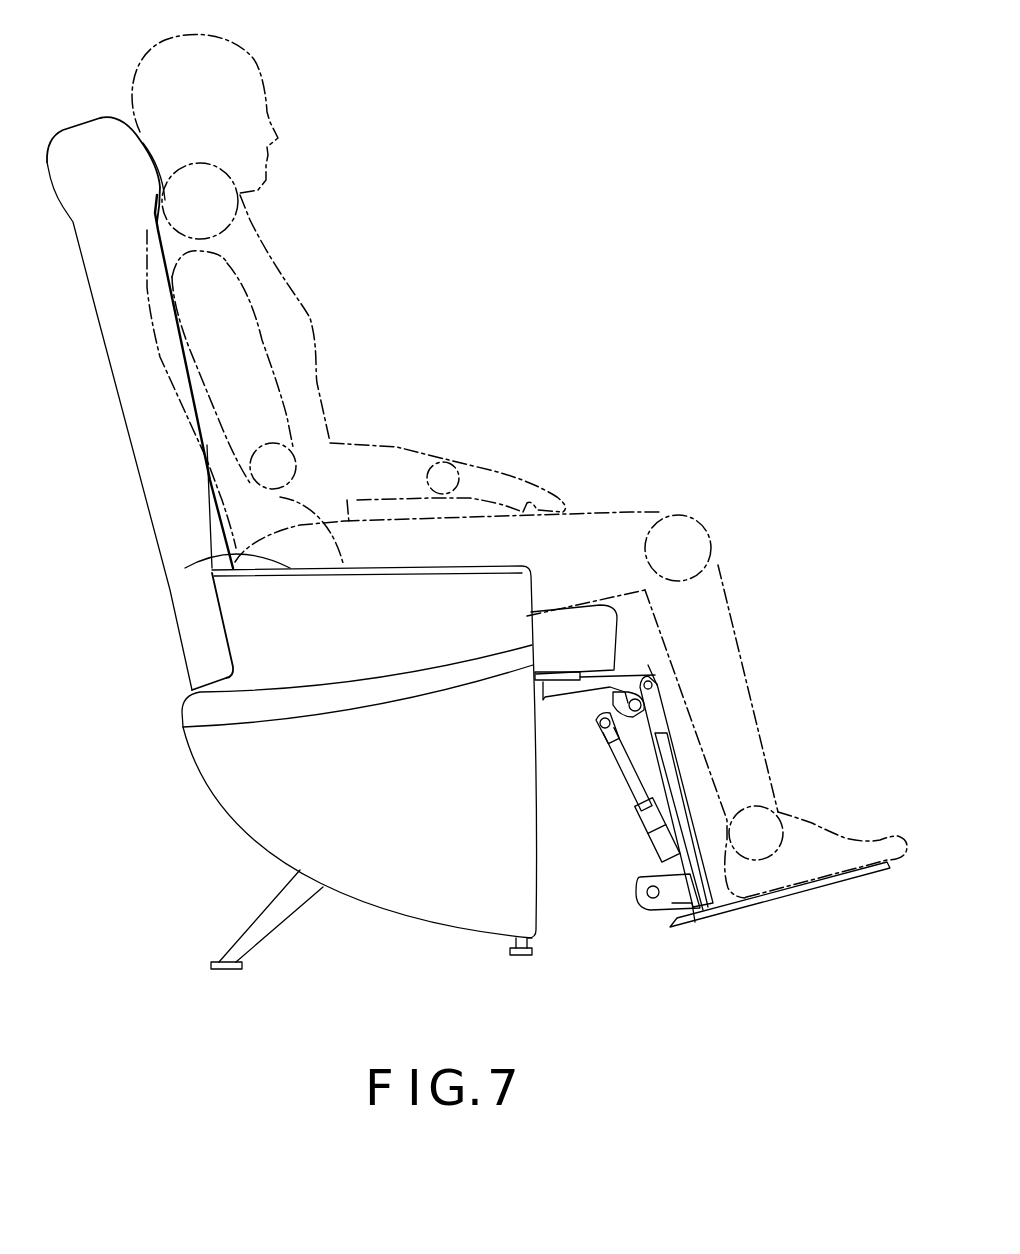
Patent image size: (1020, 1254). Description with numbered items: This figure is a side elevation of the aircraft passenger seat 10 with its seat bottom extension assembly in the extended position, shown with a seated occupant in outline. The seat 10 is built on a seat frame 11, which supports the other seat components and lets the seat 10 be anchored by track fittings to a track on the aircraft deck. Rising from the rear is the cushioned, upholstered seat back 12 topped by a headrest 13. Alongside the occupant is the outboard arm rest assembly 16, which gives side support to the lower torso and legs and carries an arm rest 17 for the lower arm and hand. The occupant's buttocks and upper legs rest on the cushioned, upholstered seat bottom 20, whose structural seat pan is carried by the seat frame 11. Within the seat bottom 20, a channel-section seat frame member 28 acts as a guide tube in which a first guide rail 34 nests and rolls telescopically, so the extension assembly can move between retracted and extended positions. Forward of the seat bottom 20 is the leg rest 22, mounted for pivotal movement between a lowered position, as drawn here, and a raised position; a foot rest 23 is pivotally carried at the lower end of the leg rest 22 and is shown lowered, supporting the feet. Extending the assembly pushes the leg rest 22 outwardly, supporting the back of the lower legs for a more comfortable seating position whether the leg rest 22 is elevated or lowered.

The seat 10 is at (128, 868).
The seat frame 11 is at (277, 907).
The seat back 12 is at (118, 348).
The headrest 13 is at (92, 145).
The outboard arm rest assembly 16 is at (336, 644).
The arm rest 17 is at (245, 558).
The seat bottom 20 is at (575, 637).
The leg rest 22 is at (656, 690).
The foot rest 23 is at (778, 897).
The seat frame member 28 is at (546, 705).
The first guide rail 34 is at (598, 684).